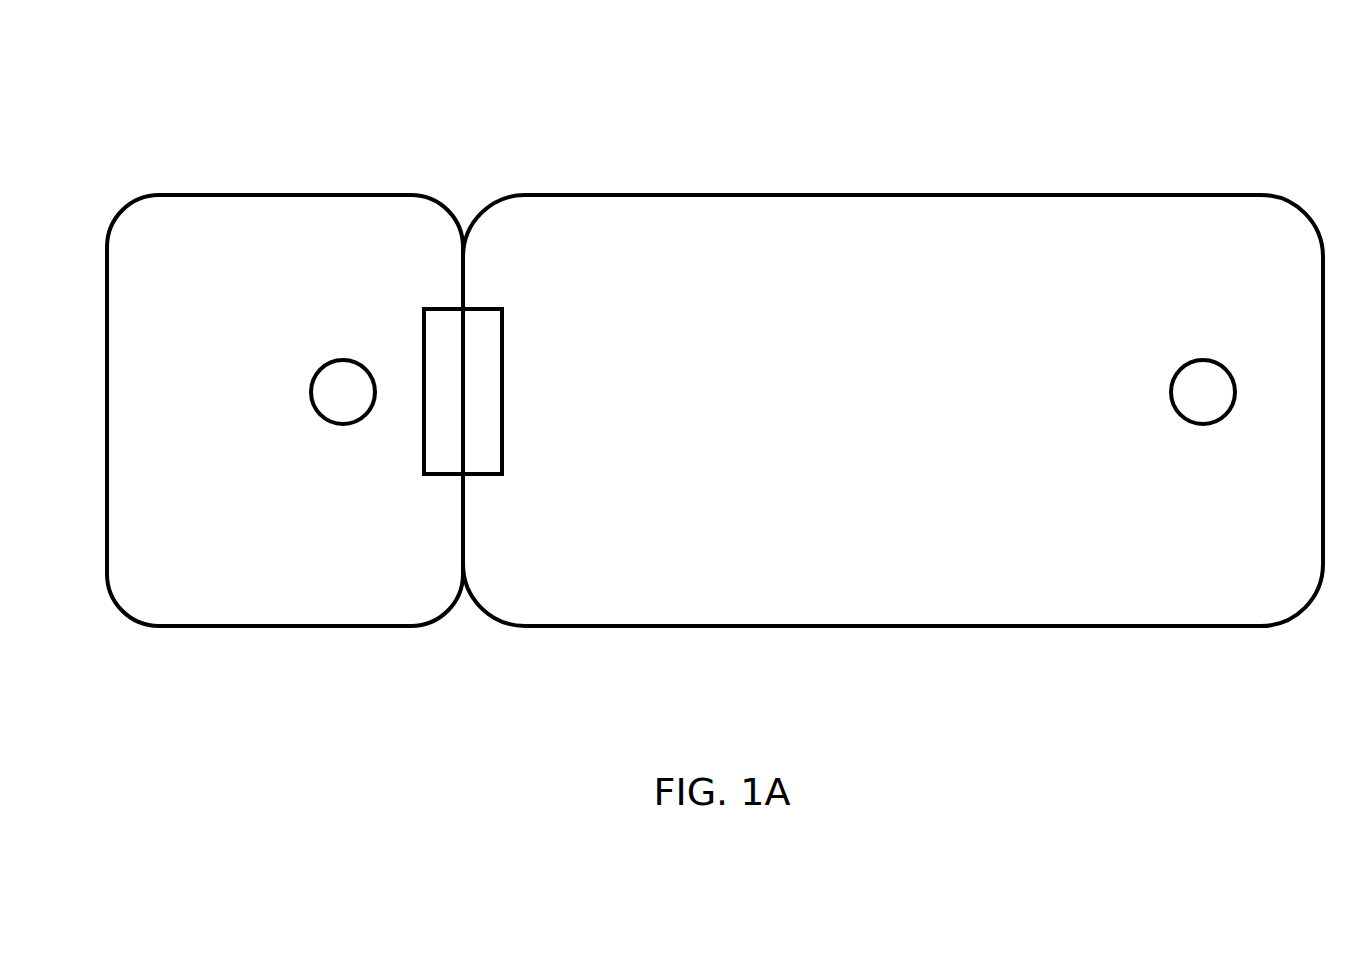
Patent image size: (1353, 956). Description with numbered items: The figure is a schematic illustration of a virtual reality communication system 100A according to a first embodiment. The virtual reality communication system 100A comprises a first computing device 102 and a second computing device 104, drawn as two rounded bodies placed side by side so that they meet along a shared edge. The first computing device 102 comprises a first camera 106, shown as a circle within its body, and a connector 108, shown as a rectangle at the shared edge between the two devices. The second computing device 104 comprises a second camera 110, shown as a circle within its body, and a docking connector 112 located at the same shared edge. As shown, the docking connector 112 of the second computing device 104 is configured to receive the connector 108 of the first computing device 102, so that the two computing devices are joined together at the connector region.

The virtual reality communication system 100A is at (151, 106).
The first computing device 102 is at (293, 244).
The second computing device 104 is at (865, 244).
The first camera 106 is at (343, 425).
The connector 108 is at (437, 308).
The second camera 110 is at (1203, 425).
The docking connector 112 is at (606, 511).